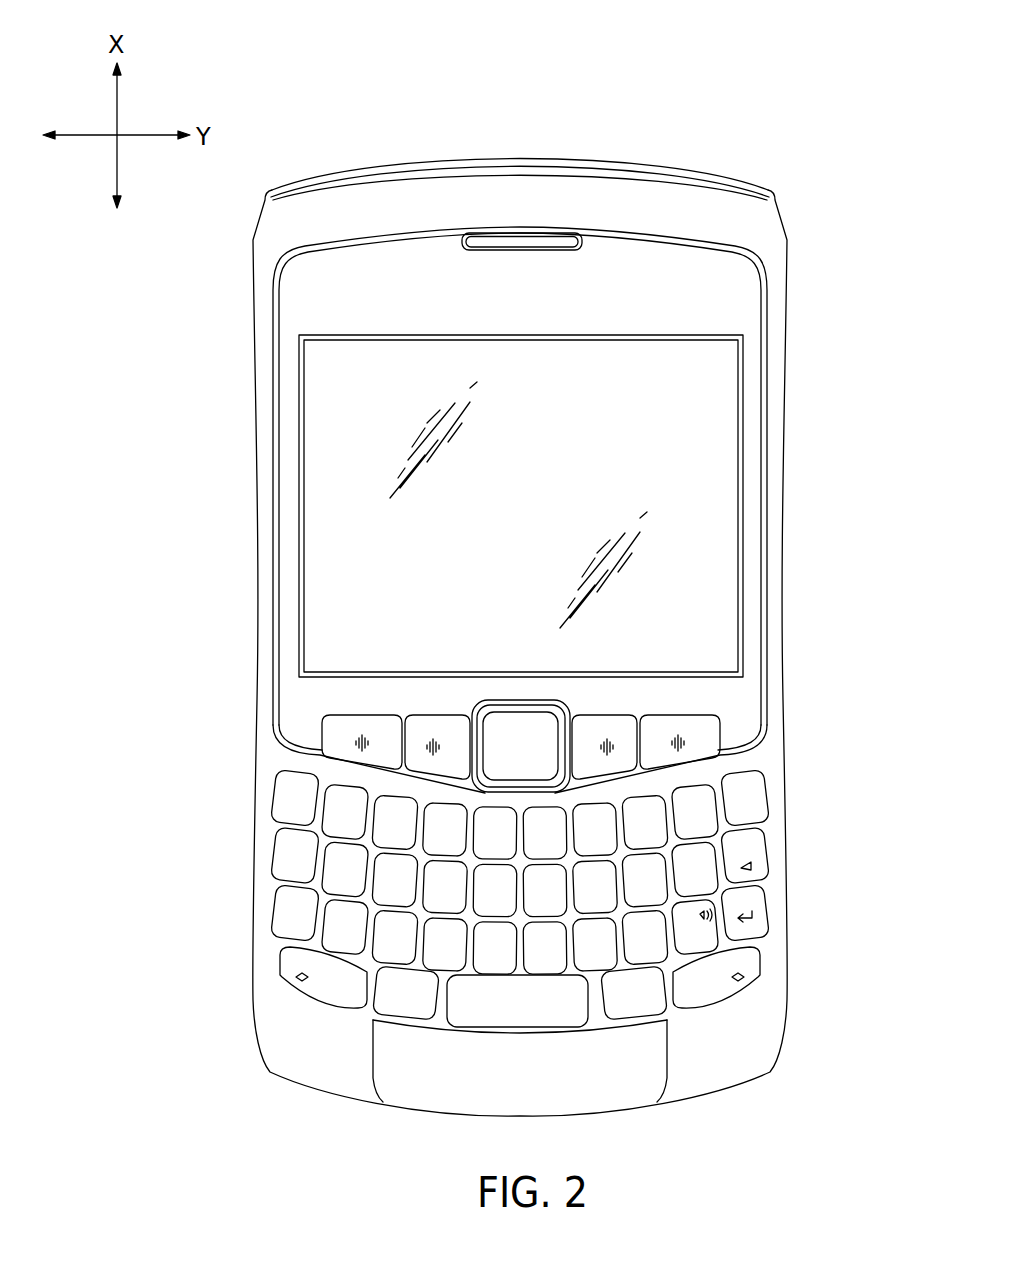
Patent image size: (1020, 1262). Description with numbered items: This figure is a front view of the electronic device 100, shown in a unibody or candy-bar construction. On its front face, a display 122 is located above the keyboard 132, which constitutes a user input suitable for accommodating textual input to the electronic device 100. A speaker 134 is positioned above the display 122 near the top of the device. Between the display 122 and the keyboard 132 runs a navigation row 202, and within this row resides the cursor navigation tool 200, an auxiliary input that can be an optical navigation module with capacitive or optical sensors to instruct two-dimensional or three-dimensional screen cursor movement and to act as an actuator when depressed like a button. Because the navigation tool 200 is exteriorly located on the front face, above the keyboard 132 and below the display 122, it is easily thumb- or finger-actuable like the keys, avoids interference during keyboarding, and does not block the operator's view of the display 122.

The electronic device 100 is at (380, 82).
The display 122 is at (723, 417).
The keyboard 132 is at (767, 762).
The speaker 134 is at (522, 238).
The cursor navigation tool 200 is at (517, 735).
The navigation row 202 is at (333, 737).